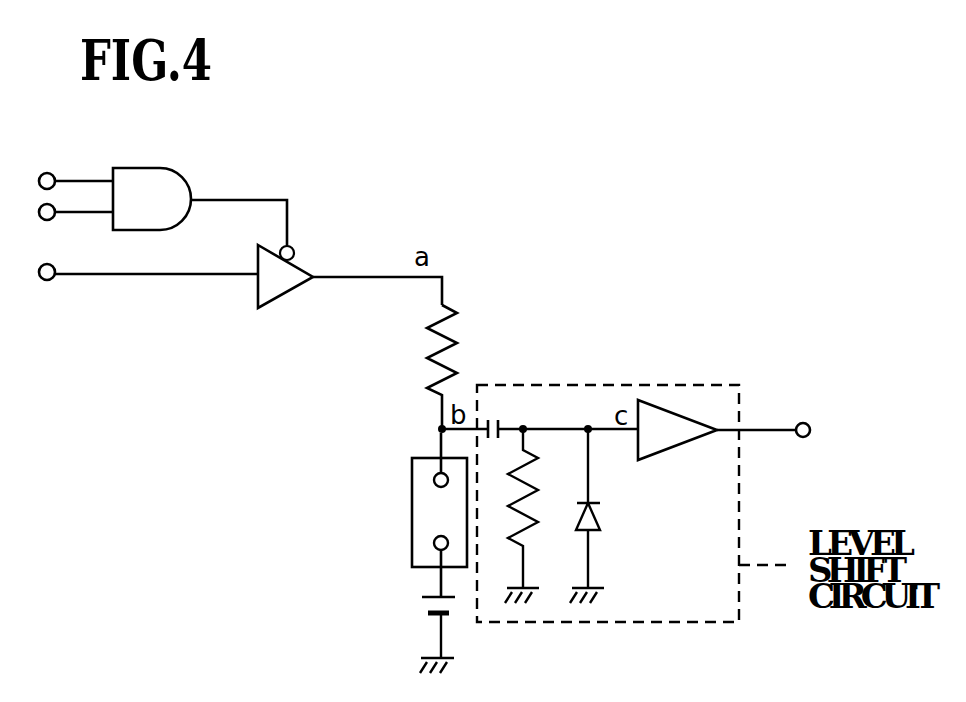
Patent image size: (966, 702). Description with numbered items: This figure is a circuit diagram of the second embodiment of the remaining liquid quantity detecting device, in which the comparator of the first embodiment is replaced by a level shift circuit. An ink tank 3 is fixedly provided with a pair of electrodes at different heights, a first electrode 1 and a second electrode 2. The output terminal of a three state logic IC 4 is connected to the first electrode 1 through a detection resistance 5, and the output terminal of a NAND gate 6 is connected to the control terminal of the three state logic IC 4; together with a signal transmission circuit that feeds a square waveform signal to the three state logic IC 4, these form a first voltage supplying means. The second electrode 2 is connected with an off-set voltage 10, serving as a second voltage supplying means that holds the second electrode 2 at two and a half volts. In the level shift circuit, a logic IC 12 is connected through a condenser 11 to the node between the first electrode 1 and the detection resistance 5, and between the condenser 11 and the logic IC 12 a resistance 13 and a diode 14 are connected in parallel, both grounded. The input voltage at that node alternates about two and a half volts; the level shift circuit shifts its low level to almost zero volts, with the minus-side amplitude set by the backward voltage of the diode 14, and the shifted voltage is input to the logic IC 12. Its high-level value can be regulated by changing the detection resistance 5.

The first electrode 1 is at (433, 478).
The second electrode 2 is at (433, 548).
The ink tank 3 is at (415, 510).
The three state logic IC 4 is at (262, 298).
The detection resistance 5 is at (462, 330).
The NAND gate 6 is at (177, 190).
The off-set voltage 10 is at (423, 605).
The condenser 11 is at (495, 415).
The logic IC 12 is at (693, 422).
The resistance 13 is at (533, 480).
The diode 14 is at (603, 520).